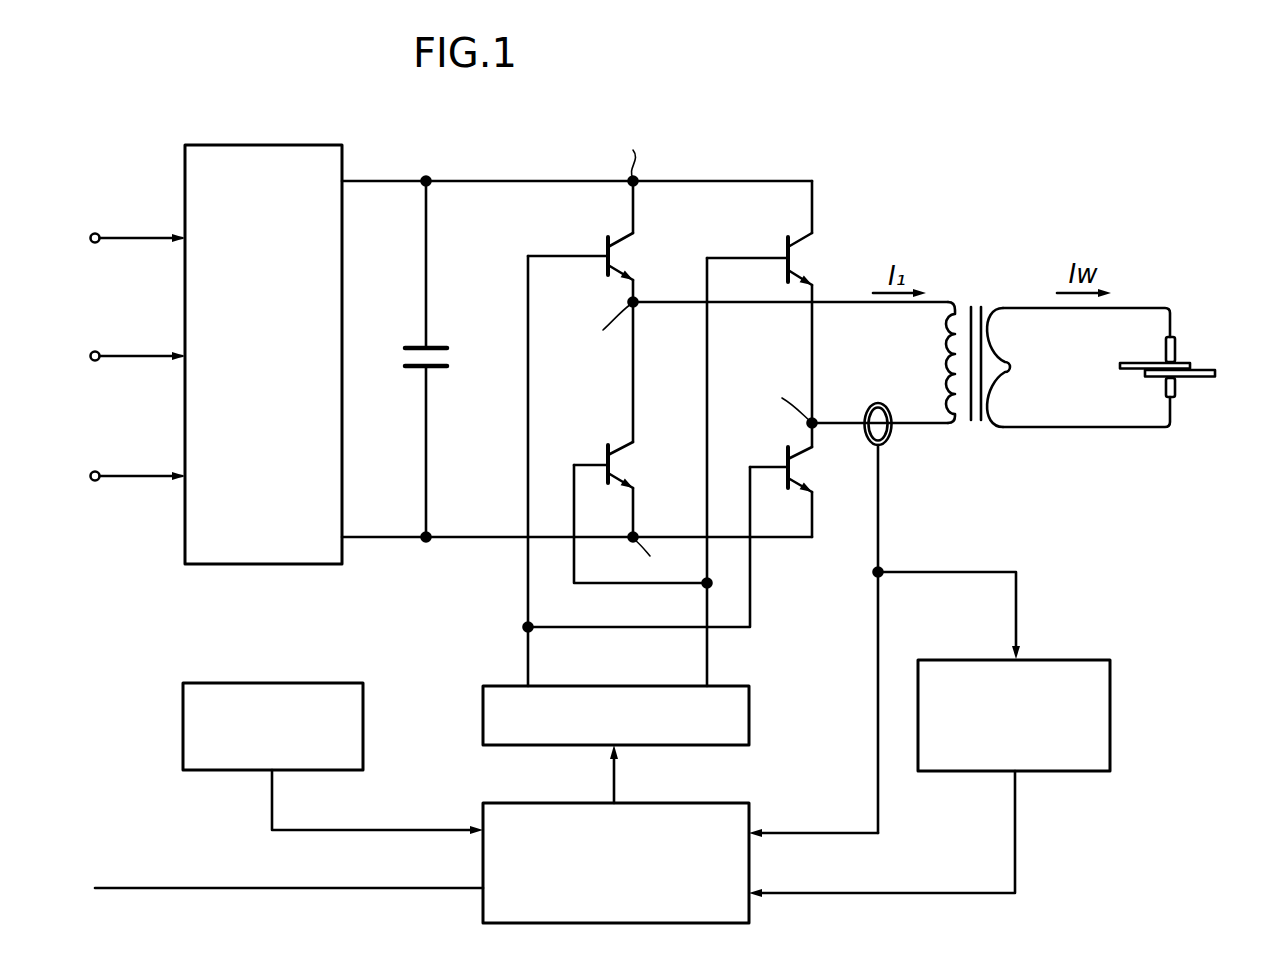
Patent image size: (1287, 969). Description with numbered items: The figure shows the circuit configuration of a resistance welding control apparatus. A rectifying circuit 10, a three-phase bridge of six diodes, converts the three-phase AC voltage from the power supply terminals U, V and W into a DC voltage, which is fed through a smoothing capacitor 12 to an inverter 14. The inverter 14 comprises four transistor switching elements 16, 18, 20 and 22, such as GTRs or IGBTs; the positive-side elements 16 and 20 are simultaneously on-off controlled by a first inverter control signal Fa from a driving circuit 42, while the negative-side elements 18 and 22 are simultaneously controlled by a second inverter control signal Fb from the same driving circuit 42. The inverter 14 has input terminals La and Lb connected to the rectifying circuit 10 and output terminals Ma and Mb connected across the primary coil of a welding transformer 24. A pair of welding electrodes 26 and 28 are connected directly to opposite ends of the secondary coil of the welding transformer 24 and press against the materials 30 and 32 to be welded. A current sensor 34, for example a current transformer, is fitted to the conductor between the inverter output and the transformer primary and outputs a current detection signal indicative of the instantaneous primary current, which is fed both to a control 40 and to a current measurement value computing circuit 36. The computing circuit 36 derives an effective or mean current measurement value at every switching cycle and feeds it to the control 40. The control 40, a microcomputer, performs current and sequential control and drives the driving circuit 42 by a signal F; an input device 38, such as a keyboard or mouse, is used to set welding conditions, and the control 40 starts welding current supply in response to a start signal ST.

The rectifying circuit 10 is at (183, 178).
The smoothing capacitor 12 is at (455, 355).
The inverter 14 is at (752, 207).
The transistor switching element 16 is at (631, 253).
The transistor switching element 18 is at (818, 260).
The transistor switching element 20 is at (805, 470).
The transistor switching element 22 is at (627, 470).
The welding transformer 24 is at (973, 290).
The welding electrode 26 is at (1178, 345).
The welding electrode 28 is at (1178, 398).
The material to be welded 30 is at (1127, 362).
The material to be welded 32 is at (1206, 380).
The current sensor 34 is at (892, 437).
The current measurement value computing circuit 36 is at (1114, 703).
The input device 38 is at (183, 706).
The control 40 is at (751, 803).
The driving circuit 42 is at (751, 707).